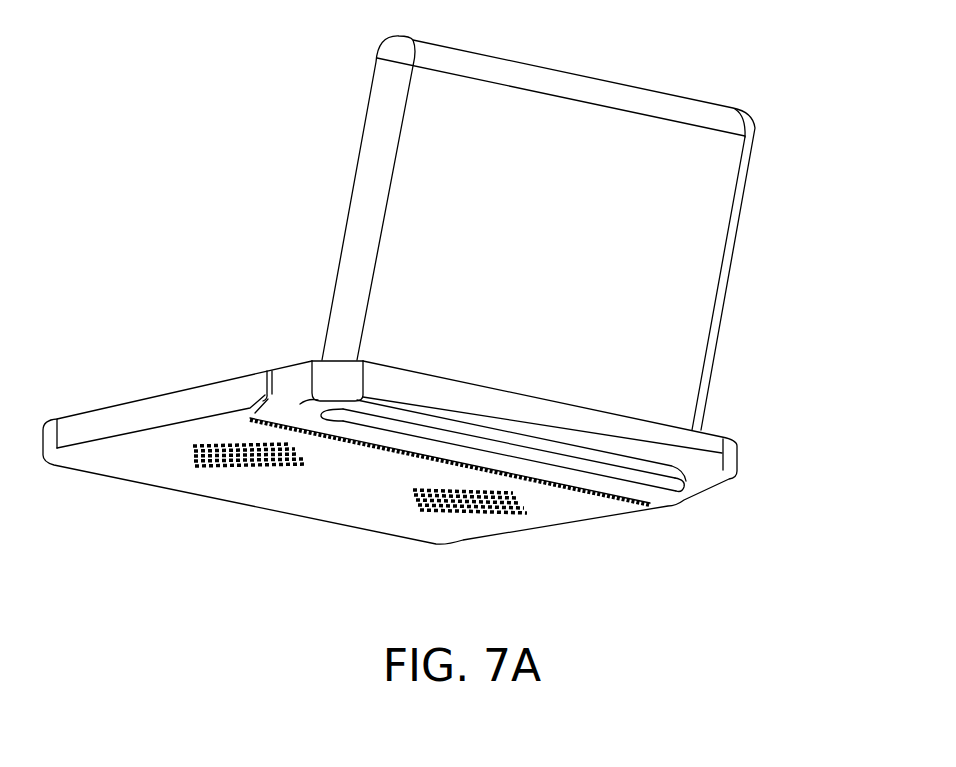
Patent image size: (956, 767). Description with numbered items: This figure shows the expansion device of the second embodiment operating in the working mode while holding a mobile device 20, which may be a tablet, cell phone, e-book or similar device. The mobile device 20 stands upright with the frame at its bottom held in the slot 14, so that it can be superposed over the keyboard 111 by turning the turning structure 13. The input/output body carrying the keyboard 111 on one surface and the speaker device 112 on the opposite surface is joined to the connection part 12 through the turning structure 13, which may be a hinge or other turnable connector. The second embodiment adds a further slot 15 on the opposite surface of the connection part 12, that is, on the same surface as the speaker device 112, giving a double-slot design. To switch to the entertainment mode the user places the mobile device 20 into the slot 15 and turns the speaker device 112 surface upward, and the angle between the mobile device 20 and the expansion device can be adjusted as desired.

The mobile device 20 is at (413, 238).
The connection part 12 is at (737, 460).
The slot 14 is at (701, 431).
The keyboard 111 is at (190, 387).
The speaker device 112 is at (470, 517).
The turning structure 13 is at (270, 422).
The slot 15 is at (681, 491).